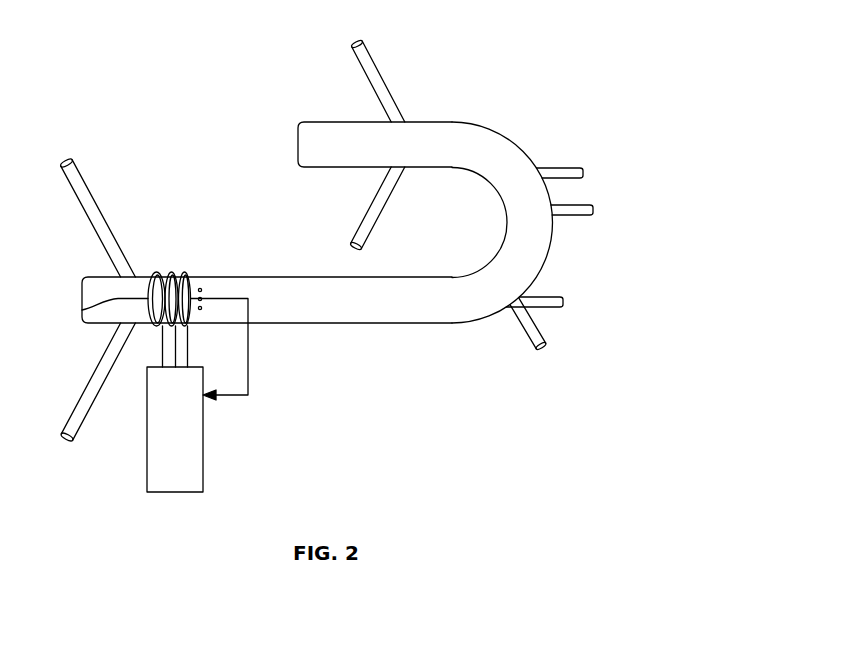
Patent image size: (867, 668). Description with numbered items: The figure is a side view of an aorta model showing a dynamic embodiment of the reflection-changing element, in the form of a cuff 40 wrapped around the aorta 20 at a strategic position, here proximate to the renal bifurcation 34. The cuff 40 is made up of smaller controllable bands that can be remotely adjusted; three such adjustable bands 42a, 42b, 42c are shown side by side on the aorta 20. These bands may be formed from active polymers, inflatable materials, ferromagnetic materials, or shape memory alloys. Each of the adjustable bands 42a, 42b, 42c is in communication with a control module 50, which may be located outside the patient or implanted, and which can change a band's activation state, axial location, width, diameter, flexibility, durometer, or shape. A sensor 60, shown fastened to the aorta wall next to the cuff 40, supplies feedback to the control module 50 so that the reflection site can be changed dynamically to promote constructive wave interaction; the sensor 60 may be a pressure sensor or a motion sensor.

The aorta 20 is at (502, 157).
The renal bifurcation 34 is at (121, 276).
The cuff 40 is at (82, 310).
The adjustable band 42a is at (161, 273).
The adjustable band 42b is at (173, 273).
The adjustable band 42c is at (186, 273).
The control module 50 is at (203, 443).
The sensor 60 is at (210, 278).